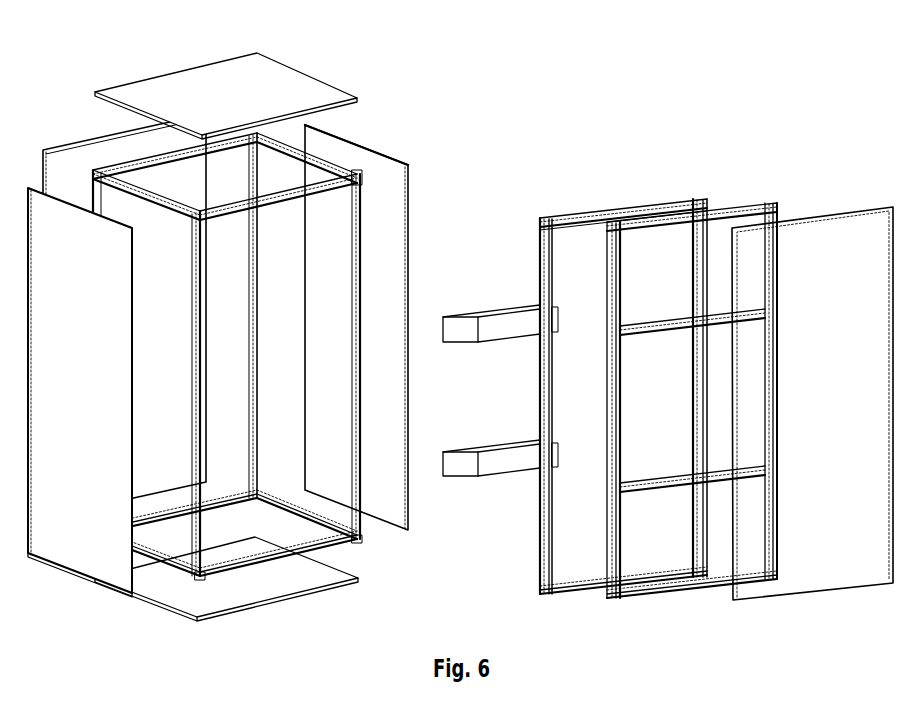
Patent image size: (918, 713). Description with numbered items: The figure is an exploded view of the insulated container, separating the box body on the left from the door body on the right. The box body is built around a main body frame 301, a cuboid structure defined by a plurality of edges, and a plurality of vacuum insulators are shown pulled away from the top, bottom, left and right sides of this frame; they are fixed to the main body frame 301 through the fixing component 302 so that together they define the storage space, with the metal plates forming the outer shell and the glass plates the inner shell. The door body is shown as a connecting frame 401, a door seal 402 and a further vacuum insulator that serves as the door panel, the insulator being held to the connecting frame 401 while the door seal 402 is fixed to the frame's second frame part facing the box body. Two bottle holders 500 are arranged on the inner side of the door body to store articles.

The main body frame 301 is at (355, 260).
The fixing component 302 is at (347, 168).
The connecting frame 401 is at (723, 215).
The door seal 402 is at (580, 222).
The bottle holder 500 is at (463, 323).